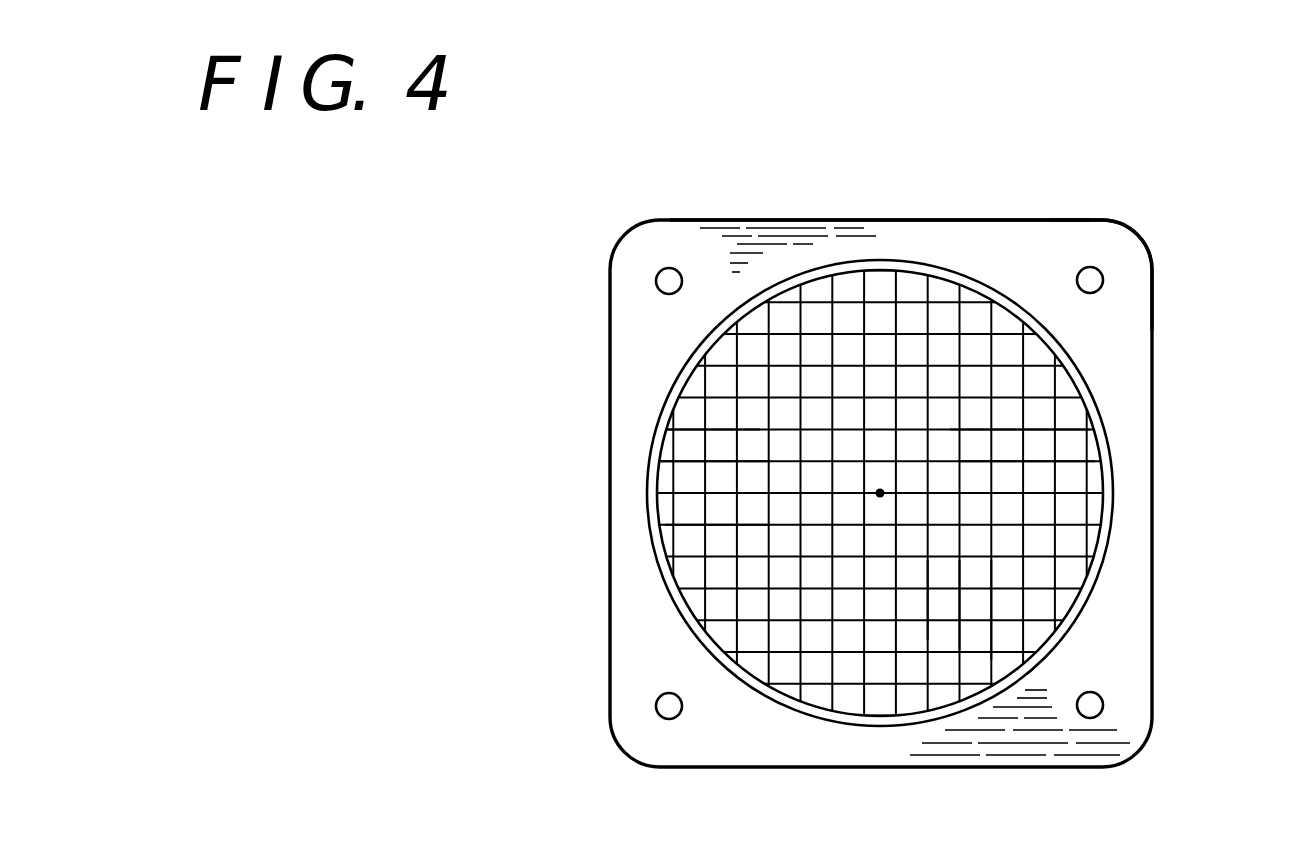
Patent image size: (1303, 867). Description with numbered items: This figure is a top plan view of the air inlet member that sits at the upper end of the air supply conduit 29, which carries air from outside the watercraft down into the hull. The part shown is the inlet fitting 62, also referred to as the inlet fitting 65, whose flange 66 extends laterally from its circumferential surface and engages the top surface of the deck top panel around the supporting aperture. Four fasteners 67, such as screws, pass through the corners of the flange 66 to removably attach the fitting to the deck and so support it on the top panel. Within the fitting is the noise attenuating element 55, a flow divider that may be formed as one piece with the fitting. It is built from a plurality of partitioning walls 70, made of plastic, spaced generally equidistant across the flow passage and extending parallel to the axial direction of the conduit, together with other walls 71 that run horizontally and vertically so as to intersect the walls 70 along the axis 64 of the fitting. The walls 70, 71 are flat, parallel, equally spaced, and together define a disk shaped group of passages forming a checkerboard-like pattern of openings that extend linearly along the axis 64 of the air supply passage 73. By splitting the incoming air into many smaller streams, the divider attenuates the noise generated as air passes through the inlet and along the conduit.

The air supply conduit 29 is at (716, 204).
The noise attenuating element 55 is at (1026, 385).
The inlet fitting 62 is at (952, 210).
The axis 64 is at (880, 493).
The inlet fitting 65 is at (980, 276).
The flange 66 is at (1072, 228).
The fastener 67 is at (669, 281).
The partitioning walls 70 is at (992, 505).
The intersecting walls 71 is at (940, 585).
The air supply passage 73 is at (752, 480).